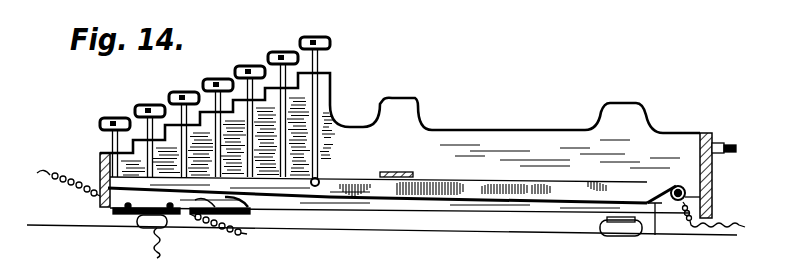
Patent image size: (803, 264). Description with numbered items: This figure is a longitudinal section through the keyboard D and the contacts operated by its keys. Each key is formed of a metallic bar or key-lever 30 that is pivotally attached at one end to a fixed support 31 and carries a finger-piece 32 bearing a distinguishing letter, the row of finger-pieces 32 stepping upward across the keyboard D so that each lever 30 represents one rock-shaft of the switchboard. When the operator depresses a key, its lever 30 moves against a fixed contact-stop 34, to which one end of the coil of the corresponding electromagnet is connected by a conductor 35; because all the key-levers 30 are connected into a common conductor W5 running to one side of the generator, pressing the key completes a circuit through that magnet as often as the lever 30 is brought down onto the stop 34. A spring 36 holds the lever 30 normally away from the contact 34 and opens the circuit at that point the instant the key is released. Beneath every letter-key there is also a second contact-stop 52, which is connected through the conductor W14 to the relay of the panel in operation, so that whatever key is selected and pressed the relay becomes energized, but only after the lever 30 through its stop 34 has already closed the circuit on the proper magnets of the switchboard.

The fixed support 31 is at (733, 189).
The finger-piece 32 is at (243, 111).
The key-lever 30 is at (455, 182).
The contact-stop 34 is at (244, 215).
The conductor 35 is at (249, 252).
The spring 36 is at (640, 221).
The contact-stop 52 is at (180, 214).
The keyboard D is at (488, 110).
The common conductor W5 is at (399, 202).
The conductor W14 is at (165, 246).